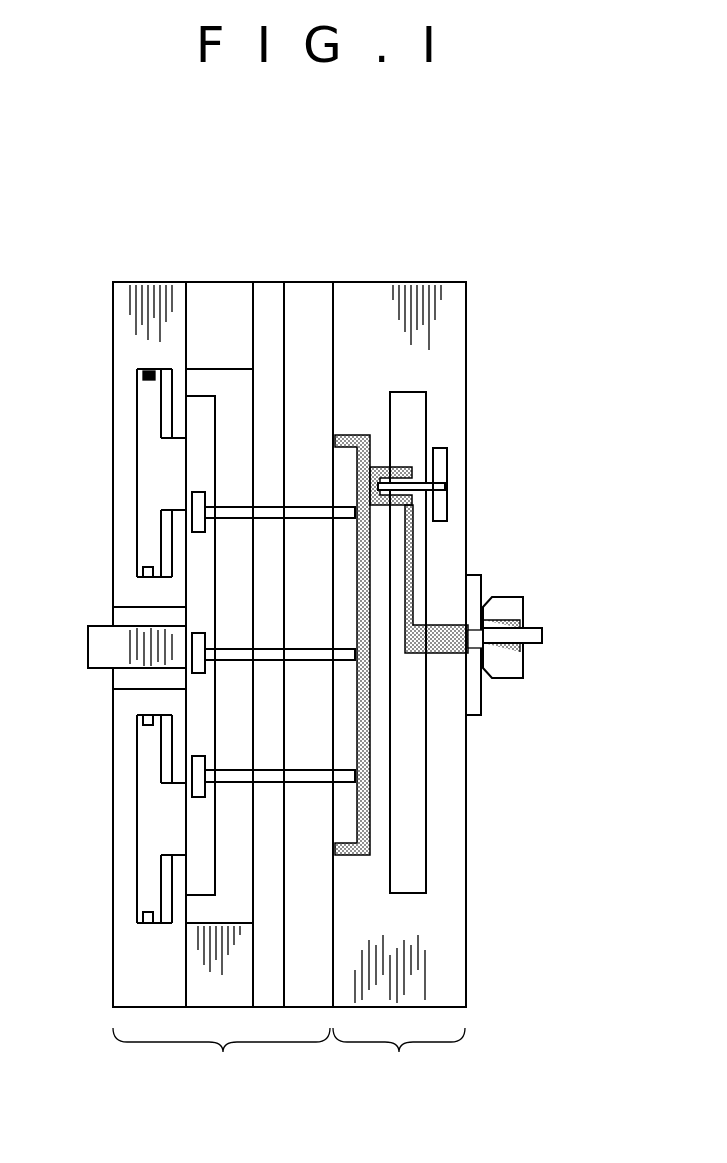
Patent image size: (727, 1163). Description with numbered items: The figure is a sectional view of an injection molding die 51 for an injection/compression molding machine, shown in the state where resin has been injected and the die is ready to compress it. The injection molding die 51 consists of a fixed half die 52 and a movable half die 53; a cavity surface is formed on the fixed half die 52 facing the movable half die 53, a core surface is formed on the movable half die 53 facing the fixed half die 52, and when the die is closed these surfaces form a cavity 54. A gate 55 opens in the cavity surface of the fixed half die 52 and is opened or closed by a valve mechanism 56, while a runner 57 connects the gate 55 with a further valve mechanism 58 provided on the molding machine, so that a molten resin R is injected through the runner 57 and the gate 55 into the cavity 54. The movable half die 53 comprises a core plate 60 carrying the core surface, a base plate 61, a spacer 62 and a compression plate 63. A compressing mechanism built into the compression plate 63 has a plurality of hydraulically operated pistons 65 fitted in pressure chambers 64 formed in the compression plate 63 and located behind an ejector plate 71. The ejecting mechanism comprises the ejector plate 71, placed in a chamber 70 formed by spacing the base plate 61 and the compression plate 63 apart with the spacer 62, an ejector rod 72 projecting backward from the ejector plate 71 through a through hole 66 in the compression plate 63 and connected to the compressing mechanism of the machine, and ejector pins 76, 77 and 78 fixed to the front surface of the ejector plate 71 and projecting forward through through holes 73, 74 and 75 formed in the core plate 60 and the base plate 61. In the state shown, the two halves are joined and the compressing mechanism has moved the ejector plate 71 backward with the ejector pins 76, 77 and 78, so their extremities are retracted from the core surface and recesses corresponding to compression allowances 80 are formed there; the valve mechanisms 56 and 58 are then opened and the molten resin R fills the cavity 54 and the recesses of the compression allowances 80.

The injection molding die 51 is at (478, 990).
The fixed half die 52 is at (399, 1060).
The movable half die 53 is at (221, 1060).
The cavity 54 is at (352, 857).
The gate 55 is at (380, 470).
The valve mechanism 56 is at (456, 452).
The runner 57 is at (413, 553).
The valve mechanism 58 is at (527, 660).
The molten resin R is at (440, 625).
The core plate 60 is at (312, 298).
The base plate 61 is at (268, 295).
The spacer 62 is at (223, 297).
The compression plate 63 is at (160, 283).
The pressure chambers 64 is at (166, 370).
The pistons 65 is at (145, 483).
The through hole 66 is at (118, 680).
The chamber 70 is at (220, 377).
The ejector plate 71 is at (205, 893).
The ejector rod 72 is at (100, 648).
The through hole 73 is at (321, 520).
The through hole 74 is at (319, 662).
The through hole 75 is at (317, 784).
The ejector pin 76 is at (312, 507).
The ejector pin 77 is at (314, 648).
The ejector pin 78 is at (313, 770).
The compression allowances 80 is at (360, 778).